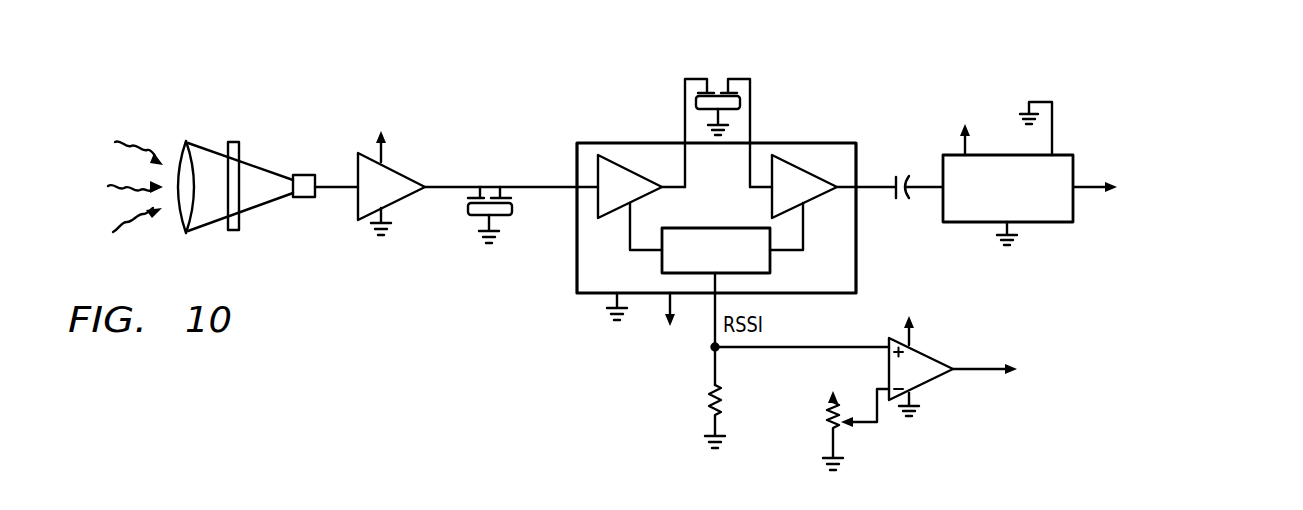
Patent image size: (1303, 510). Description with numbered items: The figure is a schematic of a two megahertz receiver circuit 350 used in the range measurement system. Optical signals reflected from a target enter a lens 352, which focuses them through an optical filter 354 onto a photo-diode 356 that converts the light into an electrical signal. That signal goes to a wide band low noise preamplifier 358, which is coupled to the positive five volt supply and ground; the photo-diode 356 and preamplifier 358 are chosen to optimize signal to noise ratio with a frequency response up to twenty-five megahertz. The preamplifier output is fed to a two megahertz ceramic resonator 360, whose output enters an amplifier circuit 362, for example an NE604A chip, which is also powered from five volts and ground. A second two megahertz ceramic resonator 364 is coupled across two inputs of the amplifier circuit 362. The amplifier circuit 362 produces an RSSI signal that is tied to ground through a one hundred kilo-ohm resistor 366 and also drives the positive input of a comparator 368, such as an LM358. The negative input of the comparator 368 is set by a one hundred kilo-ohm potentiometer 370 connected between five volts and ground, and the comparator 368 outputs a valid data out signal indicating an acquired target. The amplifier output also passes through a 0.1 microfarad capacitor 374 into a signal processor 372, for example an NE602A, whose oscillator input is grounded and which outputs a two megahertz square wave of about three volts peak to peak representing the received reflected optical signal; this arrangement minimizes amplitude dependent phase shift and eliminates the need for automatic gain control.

The receiver circuit 350 is at (185, 79).
The lens 352 is at (177, 141).
The optical filter 354 is at (234, 141).
The photo-diode 356 is at (306, 200).
The wide band low noise preamplifier 358 is at (398, 169).
The ceramic resonator 360 is at (513, 209).
The amplifier circuit 362 is at (576, 268).
The second ceramic resonator 364 is at (717, 84).
The resistor 366 is at (706, 409).
The comparator 368 is at (930, 357).
The potentiometer 370 is at (827, 432).
The signal processor 372 is at (1049, 226).
The capacitor 374 is at (902, 203).